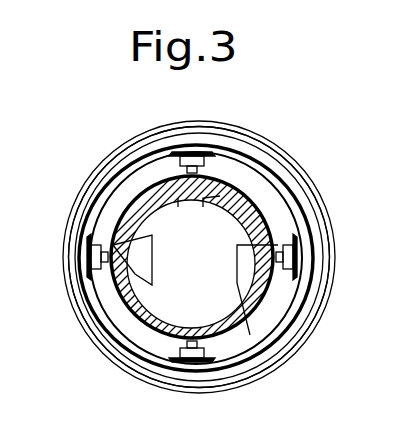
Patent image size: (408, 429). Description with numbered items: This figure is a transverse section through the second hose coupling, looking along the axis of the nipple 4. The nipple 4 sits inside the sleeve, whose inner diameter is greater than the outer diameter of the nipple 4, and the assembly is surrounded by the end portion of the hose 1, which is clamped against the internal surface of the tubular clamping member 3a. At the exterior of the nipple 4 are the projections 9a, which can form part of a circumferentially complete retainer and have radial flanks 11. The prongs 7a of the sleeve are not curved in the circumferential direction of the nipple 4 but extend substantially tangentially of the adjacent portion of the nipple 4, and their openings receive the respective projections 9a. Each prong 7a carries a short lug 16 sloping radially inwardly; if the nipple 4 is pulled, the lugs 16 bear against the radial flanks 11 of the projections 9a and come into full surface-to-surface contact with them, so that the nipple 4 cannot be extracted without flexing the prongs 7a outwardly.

The hose 1 is at (88, 184).
The tubular clamping member 3a is at (279, 145).
The radial flanks 11 is at (140, 183).
The nipple 4 is at (257, 303).
The projections 9a is at (252, 183).
The prongs 7a is at (213, 152).
The lugs 16 is at (178, 198).